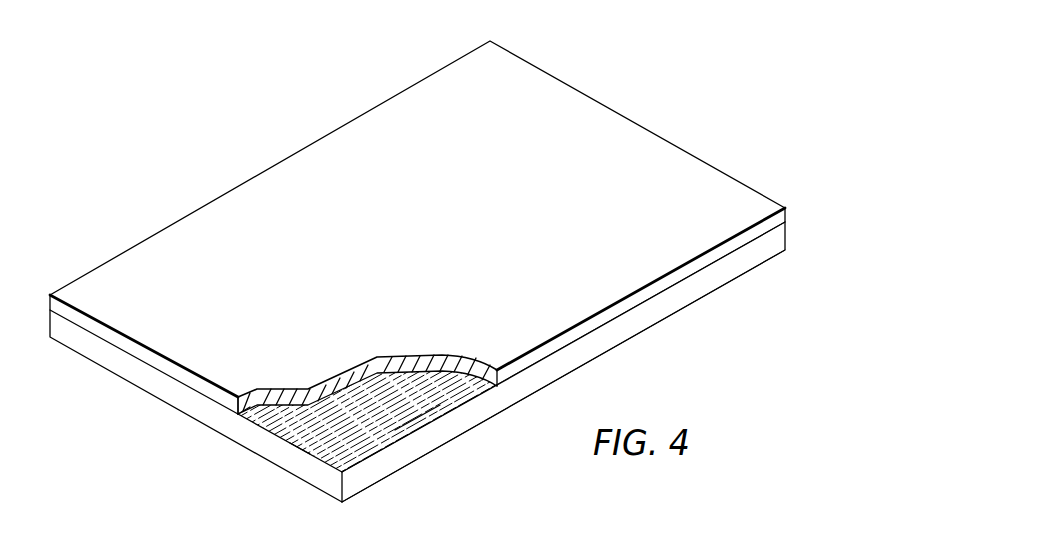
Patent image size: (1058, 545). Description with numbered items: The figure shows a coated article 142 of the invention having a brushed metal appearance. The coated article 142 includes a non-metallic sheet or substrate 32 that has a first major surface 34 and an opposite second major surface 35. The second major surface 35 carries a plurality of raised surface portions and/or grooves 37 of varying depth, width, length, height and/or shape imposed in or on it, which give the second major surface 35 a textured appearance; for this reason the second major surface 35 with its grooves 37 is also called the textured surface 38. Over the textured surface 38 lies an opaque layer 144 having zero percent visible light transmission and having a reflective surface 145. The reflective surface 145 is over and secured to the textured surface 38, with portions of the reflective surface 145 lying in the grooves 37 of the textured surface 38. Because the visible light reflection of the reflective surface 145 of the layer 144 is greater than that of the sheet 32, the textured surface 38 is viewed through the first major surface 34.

The coated article 142 is at (659, 76).
The opaque layer 144 is at (541, 95).
The reflective surface 145 is at (272, 412).
The non-metallic sheet or substrate 32 is at (703, 282).
The first major surface 34 is at (630, 340).
The second major surface 35 is at (278, 428).
The raised surface portions and/or grooves 37 is at (398, 428).
The textured surface 38 is at (324, 441).